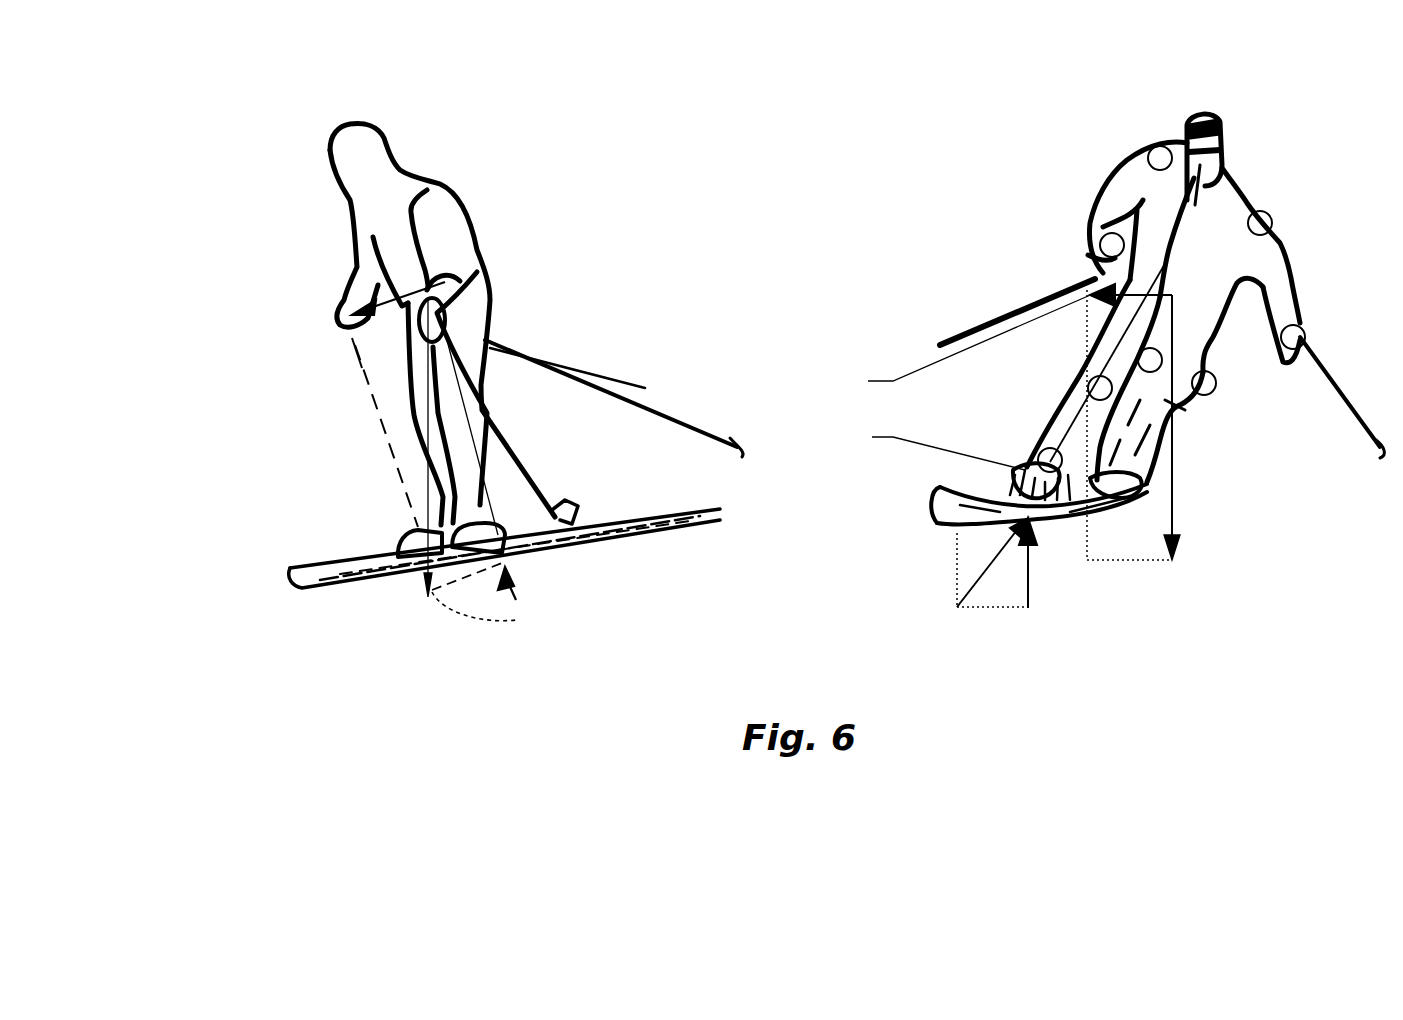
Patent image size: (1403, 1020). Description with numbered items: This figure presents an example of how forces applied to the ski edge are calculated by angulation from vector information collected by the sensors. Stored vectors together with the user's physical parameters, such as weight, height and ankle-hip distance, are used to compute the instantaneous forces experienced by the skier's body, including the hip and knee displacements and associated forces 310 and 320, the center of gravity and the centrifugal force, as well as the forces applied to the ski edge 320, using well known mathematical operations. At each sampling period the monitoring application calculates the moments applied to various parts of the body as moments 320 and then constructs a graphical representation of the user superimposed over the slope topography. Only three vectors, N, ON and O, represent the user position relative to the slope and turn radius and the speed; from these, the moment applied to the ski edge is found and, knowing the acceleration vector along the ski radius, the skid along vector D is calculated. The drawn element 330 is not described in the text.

The hip and knee displacements and associated forces 310 is at (413, 305).
The forces applied to the ski edge 320 is at (1174, 473).
The ski reaction force point 330 is at (1030, 593).